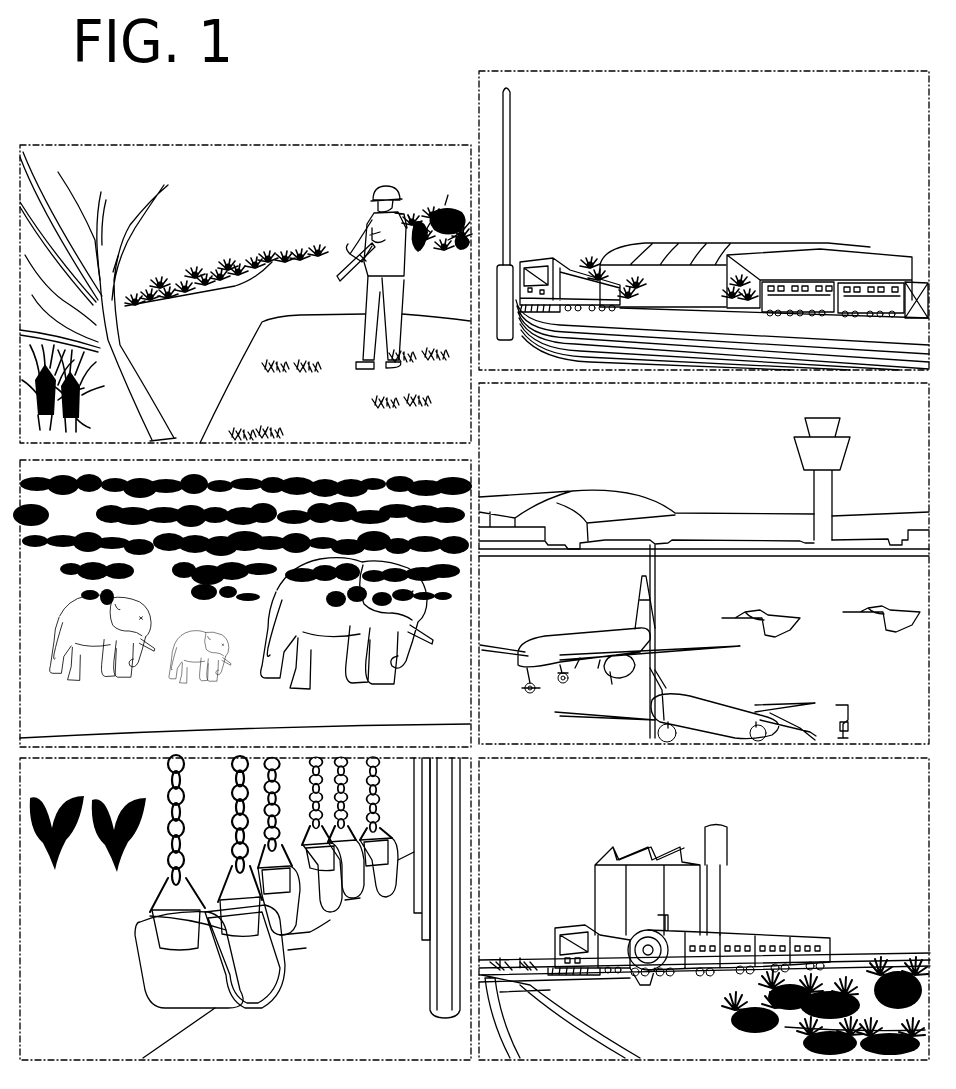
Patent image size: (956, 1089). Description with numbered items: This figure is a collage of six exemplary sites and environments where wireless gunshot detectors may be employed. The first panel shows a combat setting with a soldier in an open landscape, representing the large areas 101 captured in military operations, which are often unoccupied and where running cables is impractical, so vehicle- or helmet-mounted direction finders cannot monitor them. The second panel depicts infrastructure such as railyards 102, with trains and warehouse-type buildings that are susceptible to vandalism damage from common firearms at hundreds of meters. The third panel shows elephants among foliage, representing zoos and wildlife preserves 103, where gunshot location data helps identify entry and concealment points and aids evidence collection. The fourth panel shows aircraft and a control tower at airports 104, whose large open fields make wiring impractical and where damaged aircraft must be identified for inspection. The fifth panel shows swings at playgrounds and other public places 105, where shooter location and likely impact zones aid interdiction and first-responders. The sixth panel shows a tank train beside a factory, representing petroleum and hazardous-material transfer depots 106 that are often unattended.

The large areas 101 is at (327, 415).
The railyards 102 is at (668, 210).
The zoos and wildlife preserves 103 is at (100, 516).
The airports 104 is at (592, 445).
The playgrounds, schoolyards, fairgrounds and other public places 105 is at (100, 1024).
The transfer depots of such materials 106 is at (880, 827).